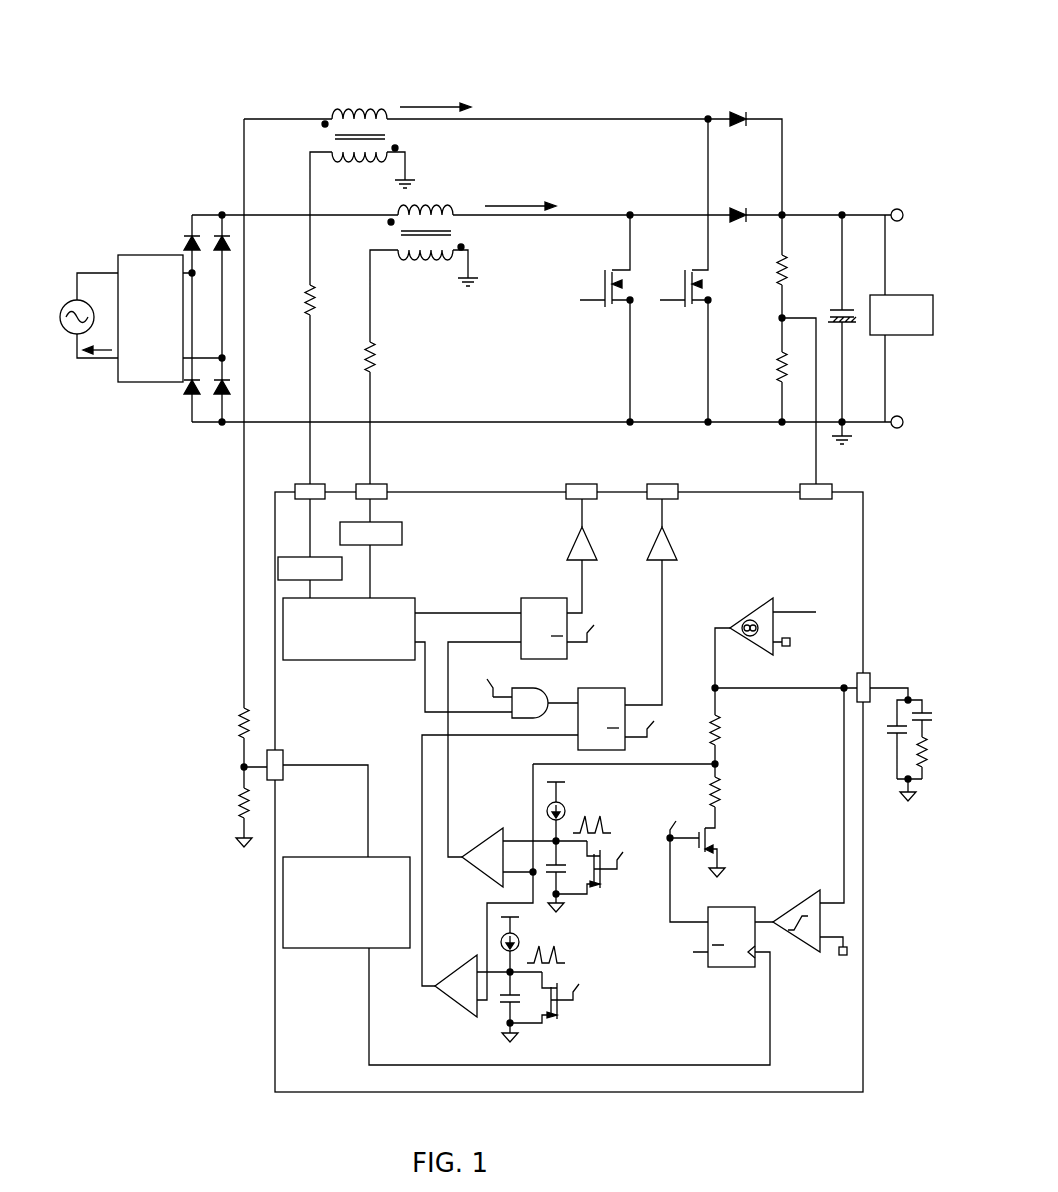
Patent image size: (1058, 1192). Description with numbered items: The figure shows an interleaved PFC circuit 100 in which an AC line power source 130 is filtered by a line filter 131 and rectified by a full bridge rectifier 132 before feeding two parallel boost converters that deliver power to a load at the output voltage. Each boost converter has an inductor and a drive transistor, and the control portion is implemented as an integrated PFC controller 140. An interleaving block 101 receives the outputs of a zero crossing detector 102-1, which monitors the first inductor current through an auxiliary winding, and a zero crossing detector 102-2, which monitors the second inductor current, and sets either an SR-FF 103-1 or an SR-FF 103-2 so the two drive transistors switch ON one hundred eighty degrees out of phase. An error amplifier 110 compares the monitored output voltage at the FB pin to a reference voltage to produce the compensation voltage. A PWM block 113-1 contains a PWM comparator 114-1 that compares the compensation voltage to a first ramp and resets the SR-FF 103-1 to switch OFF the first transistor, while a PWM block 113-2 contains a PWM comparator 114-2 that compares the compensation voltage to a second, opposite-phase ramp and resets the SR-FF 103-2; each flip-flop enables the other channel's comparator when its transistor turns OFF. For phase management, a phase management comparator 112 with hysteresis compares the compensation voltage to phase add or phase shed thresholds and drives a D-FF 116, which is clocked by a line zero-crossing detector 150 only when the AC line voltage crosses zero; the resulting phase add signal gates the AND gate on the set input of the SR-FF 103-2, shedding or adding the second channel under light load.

The interleaved PFC circuit 100 is at (160, 82).
The AC line power source 130 is at (66, 304).
The line filter 131 is at (158, 255).
The full bridge rectifier 132 is at (205, 424).
The PFC controller 140 is at (275, 1050).
The interleaving block 101 is at (348, 660).
The zero crossing detector 102-1 is at (402, 533).
The zero crossing detector 102-2 is at (278, 563).
The SR-FF 103-1 is at (530, 598).
The SR-FF 103-2 is at (614, 682).
The error amplifier 110 is at (737, 610).
The phase management comparator 112 is at (797, 906).
The PWM block 113-1 is at (597, 890).
The PWM block 113-2 is at (553, 1020).
The PWM comparator 114-1 is at (478, 872).
The PWM comparator 114-2 is at (460, 1005).
The D-FF 116 is at (693, 953).
The line zero-crossing detector 150 is at (325, 857).